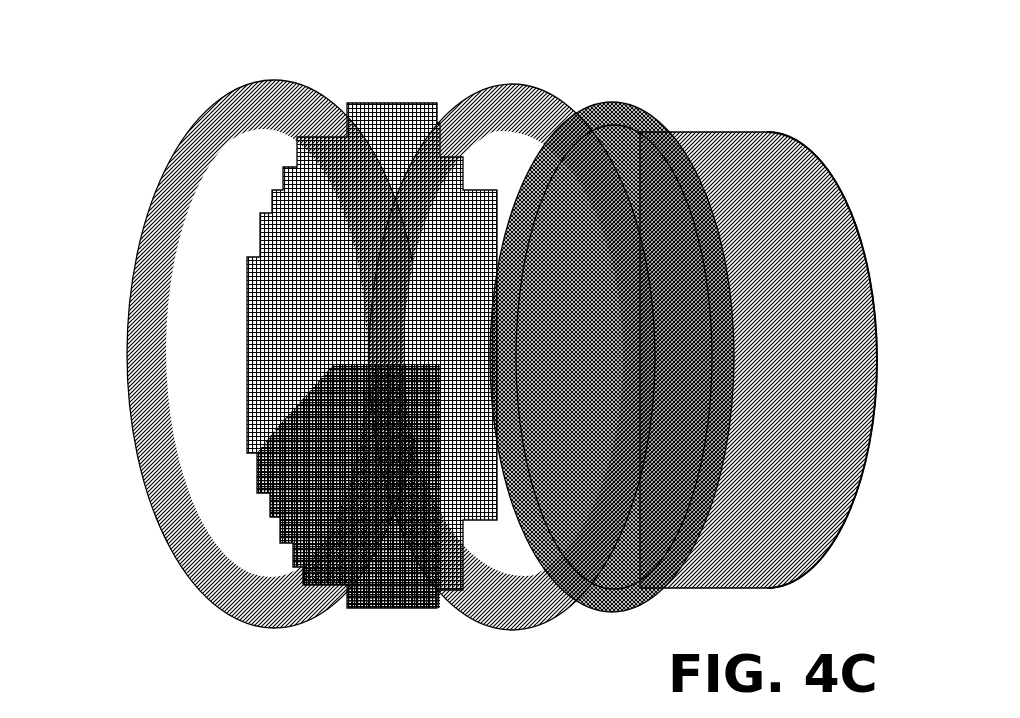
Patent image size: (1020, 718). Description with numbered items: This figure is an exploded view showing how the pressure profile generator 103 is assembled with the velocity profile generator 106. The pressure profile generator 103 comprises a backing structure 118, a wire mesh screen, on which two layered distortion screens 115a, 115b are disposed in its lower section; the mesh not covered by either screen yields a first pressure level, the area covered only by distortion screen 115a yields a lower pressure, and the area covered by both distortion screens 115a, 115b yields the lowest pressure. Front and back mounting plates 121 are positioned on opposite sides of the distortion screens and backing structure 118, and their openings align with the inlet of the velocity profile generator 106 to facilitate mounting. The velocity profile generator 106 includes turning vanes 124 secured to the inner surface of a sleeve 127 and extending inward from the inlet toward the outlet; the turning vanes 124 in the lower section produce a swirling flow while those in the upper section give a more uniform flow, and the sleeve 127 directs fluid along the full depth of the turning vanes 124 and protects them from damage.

The pressure profile generator 103 is at (567, 83).
The velocity profile generator 106 is at (764, 337).
The backing structure 118 is at (343, 377).
The distortion screen 115a is at (278, 517).
The distortion screen 115b is at (387, 597).
The mounting plates 121 is at (182, 555).
The turning vanes 124 is at (683, 232).
The sleeve 127 is at (826, 535).